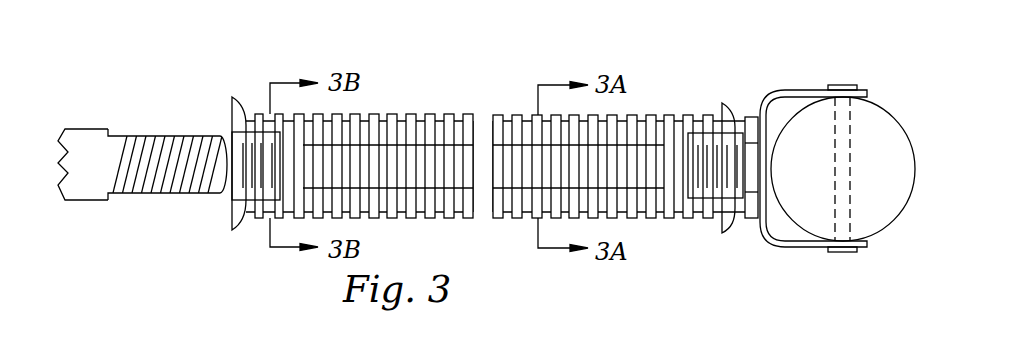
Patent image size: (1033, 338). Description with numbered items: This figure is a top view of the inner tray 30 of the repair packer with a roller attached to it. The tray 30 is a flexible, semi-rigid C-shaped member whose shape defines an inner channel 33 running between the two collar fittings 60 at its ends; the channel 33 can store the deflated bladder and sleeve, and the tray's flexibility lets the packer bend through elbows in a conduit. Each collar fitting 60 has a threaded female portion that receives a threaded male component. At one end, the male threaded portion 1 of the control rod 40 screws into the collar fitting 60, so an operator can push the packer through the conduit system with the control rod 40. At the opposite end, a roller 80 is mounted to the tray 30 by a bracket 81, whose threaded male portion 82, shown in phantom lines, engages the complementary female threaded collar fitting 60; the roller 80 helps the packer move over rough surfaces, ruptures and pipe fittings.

The male threaded portion 1 is at (152, 187).
The inner tray 30 is at (428, 118).
The inner channel 33 is at (508, 145).
The control rod 40 is at (90, 140).
The collar fitting 60 is at (238, 113).
The roller 80 is at (882, 108).
The roller bracket 81 is at (800, 90).
The threaded male portion 82 is at (740, 202).